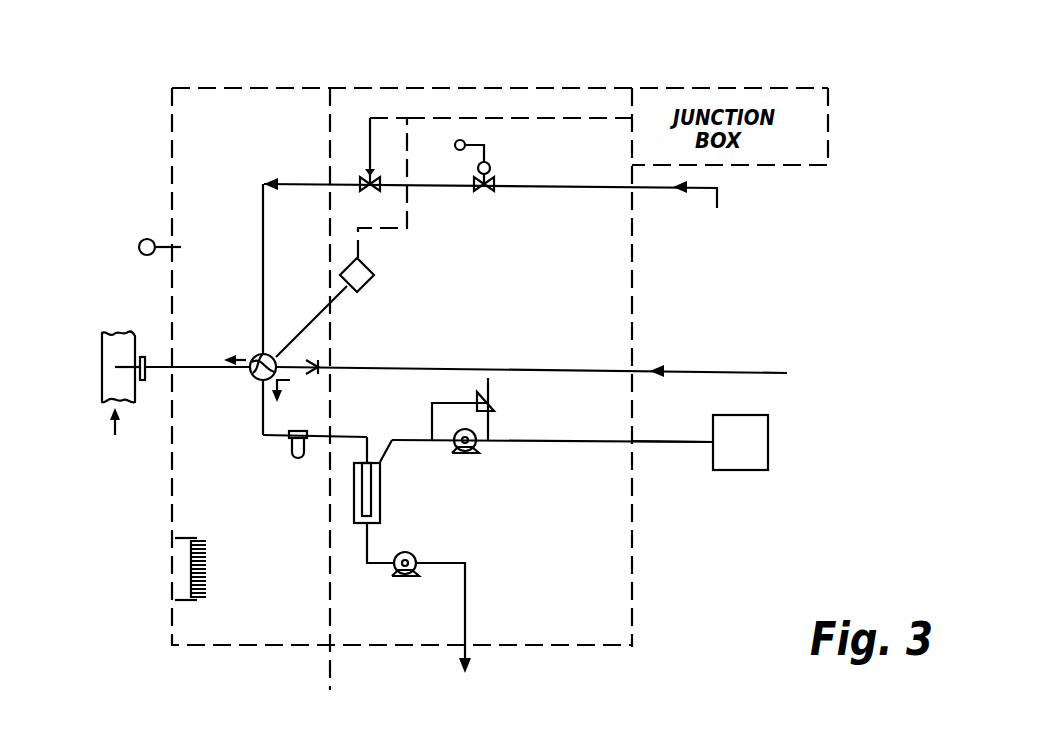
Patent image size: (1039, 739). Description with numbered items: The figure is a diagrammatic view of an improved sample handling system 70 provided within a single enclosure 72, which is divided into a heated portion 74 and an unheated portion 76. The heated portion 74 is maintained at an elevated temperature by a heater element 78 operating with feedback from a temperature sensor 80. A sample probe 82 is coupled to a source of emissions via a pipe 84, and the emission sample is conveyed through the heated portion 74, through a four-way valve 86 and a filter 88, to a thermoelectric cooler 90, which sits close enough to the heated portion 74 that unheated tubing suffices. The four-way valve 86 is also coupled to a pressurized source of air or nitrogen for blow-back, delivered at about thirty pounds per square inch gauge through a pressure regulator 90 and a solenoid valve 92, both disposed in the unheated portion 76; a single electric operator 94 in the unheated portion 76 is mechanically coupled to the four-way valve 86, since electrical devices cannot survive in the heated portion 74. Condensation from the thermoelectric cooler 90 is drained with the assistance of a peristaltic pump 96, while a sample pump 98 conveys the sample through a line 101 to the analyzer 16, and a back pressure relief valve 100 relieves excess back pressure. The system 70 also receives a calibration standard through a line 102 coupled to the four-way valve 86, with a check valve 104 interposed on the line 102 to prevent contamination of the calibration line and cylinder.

The sample handling system 70 is at (604, 45).
The enclosure 72 is at (633, 577).
The heated portion 74 is at (249, 136).
The portion of enclosure 76 is at (554, 554).
The heater element 78 is at (238, 617).
The temperature sensor 80 is at (140, 244).
The sample probe 82 is at (143, 356).
The pipe 84 is at (102, 361).
The four-way valve 86 is at (249, 357).
The filter 88 is at (296, 456).
The thermoelectric cooler 90 is at (488, 164).
The solenoid valve 92 is at (371, 192).
The electric operator 94 is at (363, 286).
The peristaltic pump 96 is at (410, 552).
The sample pump 98 is at (476, 447).
The back pressure relief valve 100 is at (494, 406).
The line 101 is at (681, 442).
The line 102 is at (438, 369).
The check valve 104 is at (325, 367).
The analyzer 16 is at (748, 457).